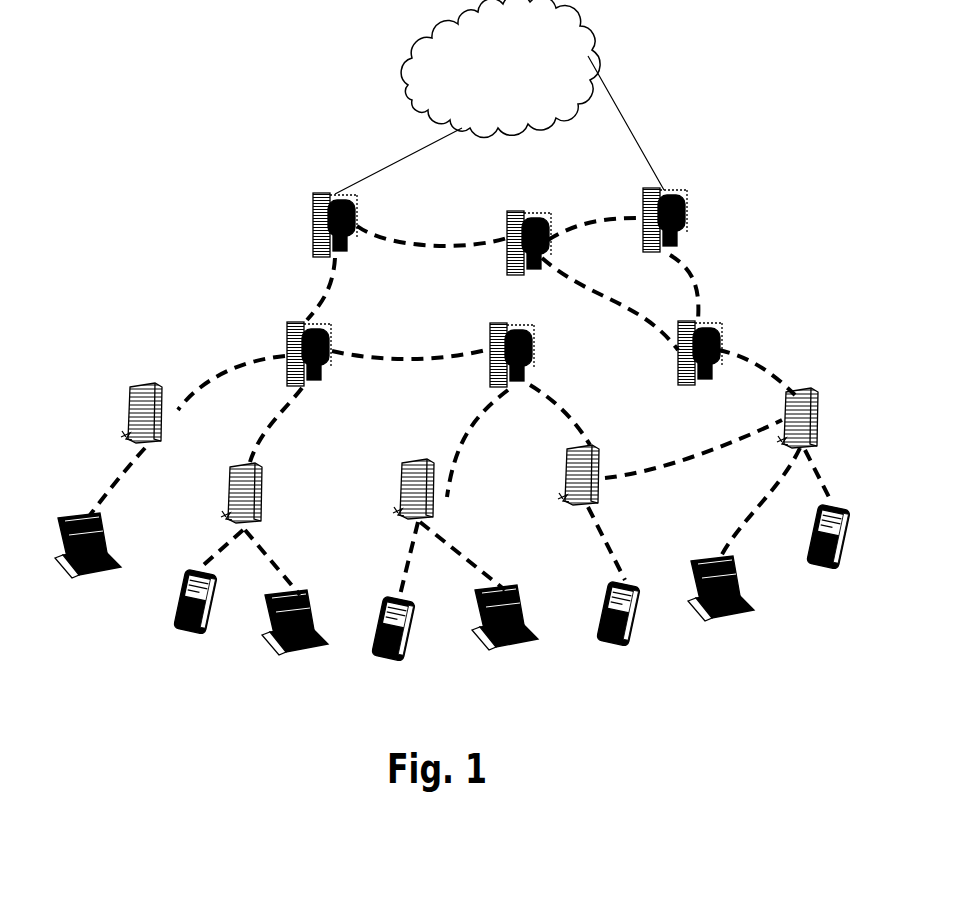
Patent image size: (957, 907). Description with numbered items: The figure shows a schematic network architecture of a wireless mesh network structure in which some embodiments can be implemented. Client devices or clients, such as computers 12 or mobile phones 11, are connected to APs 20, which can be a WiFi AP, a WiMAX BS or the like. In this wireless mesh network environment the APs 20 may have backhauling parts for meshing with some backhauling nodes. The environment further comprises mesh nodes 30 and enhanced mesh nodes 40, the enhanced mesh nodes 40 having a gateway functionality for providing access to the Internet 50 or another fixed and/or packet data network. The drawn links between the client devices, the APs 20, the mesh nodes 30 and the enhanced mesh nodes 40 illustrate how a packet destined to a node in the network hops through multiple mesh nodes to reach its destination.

The Internet 50 is at (500, 69).
The enhanced mesh node 40 is at (686, 208).
The mesh node 30 is at (716, 331).
The access point 20 is at (812, 400).
The mobile phone 11 is at (843, 535).
The computer 12 is at (726, 612).